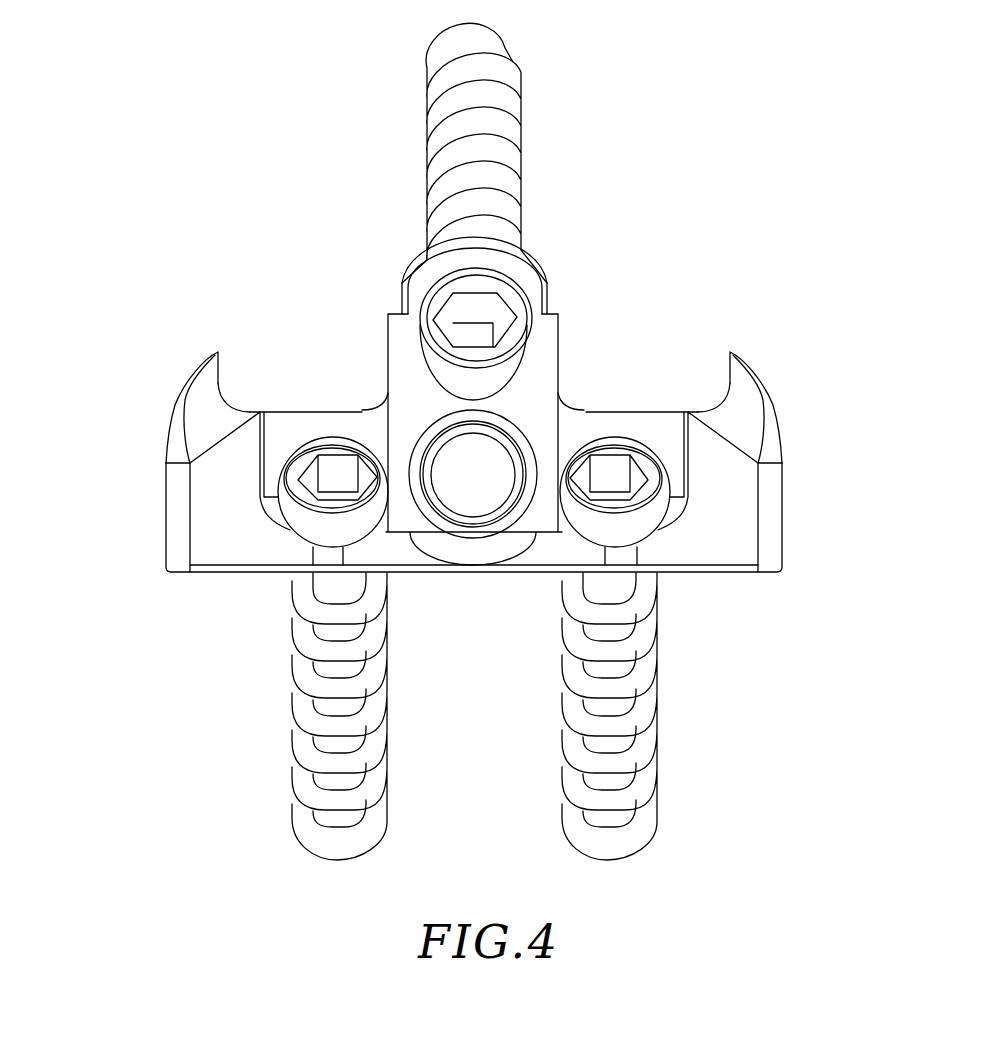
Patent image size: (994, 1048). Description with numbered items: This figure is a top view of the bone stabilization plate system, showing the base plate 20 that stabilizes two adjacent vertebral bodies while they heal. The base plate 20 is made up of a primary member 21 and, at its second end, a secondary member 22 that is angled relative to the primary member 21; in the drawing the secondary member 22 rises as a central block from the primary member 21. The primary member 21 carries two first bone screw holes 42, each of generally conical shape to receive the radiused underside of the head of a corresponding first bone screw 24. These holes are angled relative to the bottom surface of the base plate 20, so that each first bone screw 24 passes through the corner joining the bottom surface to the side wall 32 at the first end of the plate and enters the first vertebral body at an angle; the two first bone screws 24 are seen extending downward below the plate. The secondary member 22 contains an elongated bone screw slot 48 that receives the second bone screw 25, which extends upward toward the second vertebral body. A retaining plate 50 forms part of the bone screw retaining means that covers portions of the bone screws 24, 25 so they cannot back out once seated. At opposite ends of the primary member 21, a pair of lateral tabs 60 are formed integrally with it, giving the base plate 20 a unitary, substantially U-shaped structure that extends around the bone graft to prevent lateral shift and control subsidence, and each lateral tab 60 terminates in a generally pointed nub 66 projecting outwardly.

The base plate 20 is at (723, 540).
The primary member 21 is at (228, 552).
The secondary member 22 is at (400, 353).
The first bone screws 24 is at (295, 752).
The second bone screw 25 is at (522, 162).
The side wall 32 is at (518, 571).
The first bone screw holes 42 is at (333, 437).
The bone screw slot 48 is at (543, 377).
The retaining plate 50 is at (498, 373).
The lateral tabs 60 is at (177, 507).
The nub 66 is at (212, 360).